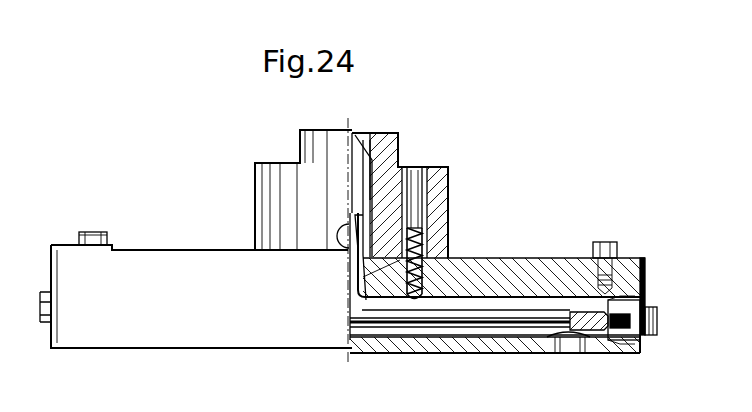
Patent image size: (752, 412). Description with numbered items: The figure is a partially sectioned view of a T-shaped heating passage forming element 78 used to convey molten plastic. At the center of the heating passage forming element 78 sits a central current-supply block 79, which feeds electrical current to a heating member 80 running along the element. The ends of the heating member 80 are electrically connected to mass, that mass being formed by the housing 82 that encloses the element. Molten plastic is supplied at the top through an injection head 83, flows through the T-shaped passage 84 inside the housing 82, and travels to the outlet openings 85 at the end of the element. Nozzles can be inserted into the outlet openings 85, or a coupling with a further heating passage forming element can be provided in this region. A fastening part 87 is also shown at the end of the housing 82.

The heating passage forming element 78 is at (481, 231).
The central current-supply block 79 is at (343, 229).
The heating member 80 is at (514, 312).
The housing 82 is at (552, 273).
The injection head 83 is at (363, 135).
The T-shaped passage 84 is at (446, 296).
The outlet openings 85 is at (568, 347).
The end nut 87 is at (647, 262).